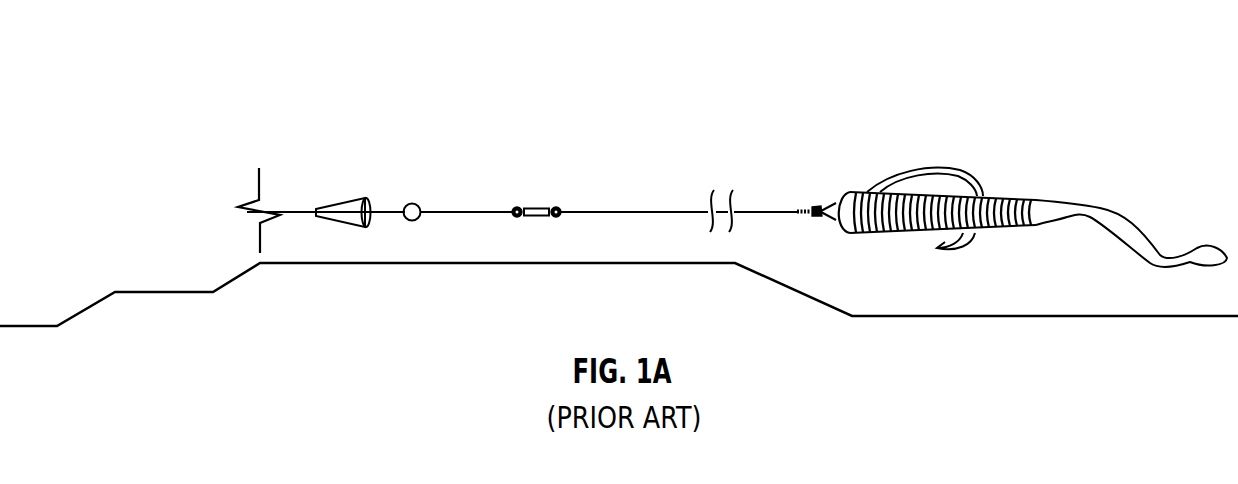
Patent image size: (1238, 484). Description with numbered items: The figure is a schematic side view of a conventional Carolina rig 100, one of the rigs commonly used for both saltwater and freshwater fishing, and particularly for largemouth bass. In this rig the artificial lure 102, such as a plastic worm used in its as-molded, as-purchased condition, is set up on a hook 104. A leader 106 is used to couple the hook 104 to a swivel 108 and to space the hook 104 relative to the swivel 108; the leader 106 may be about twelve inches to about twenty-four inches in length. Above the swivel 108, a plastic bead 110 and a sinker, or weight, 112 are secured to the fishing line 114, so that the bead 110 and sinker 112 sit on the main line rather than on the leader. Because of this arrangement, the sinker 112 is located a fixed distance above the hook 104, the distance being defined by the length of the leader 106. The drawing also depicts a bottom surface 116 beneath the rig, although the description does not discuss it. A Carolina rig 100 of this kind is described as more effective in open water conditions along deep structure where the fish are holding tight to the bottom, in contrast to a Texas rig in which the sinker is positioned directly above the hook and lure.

The Carolina rig 100 is at (315, 52).
The artificial lure 102 is at (900, 231).
The hook 104 is at (980, 180).
The leader 106 is at (748, 209).
The swivel 108 is at (536, 207).
The plastic bead 110 is at (413, 203).
The sinker 112 is at (340, 200).
The fishing line 114 is at (280, 209).
The bottom / ground surface 116 is at (440, 264).